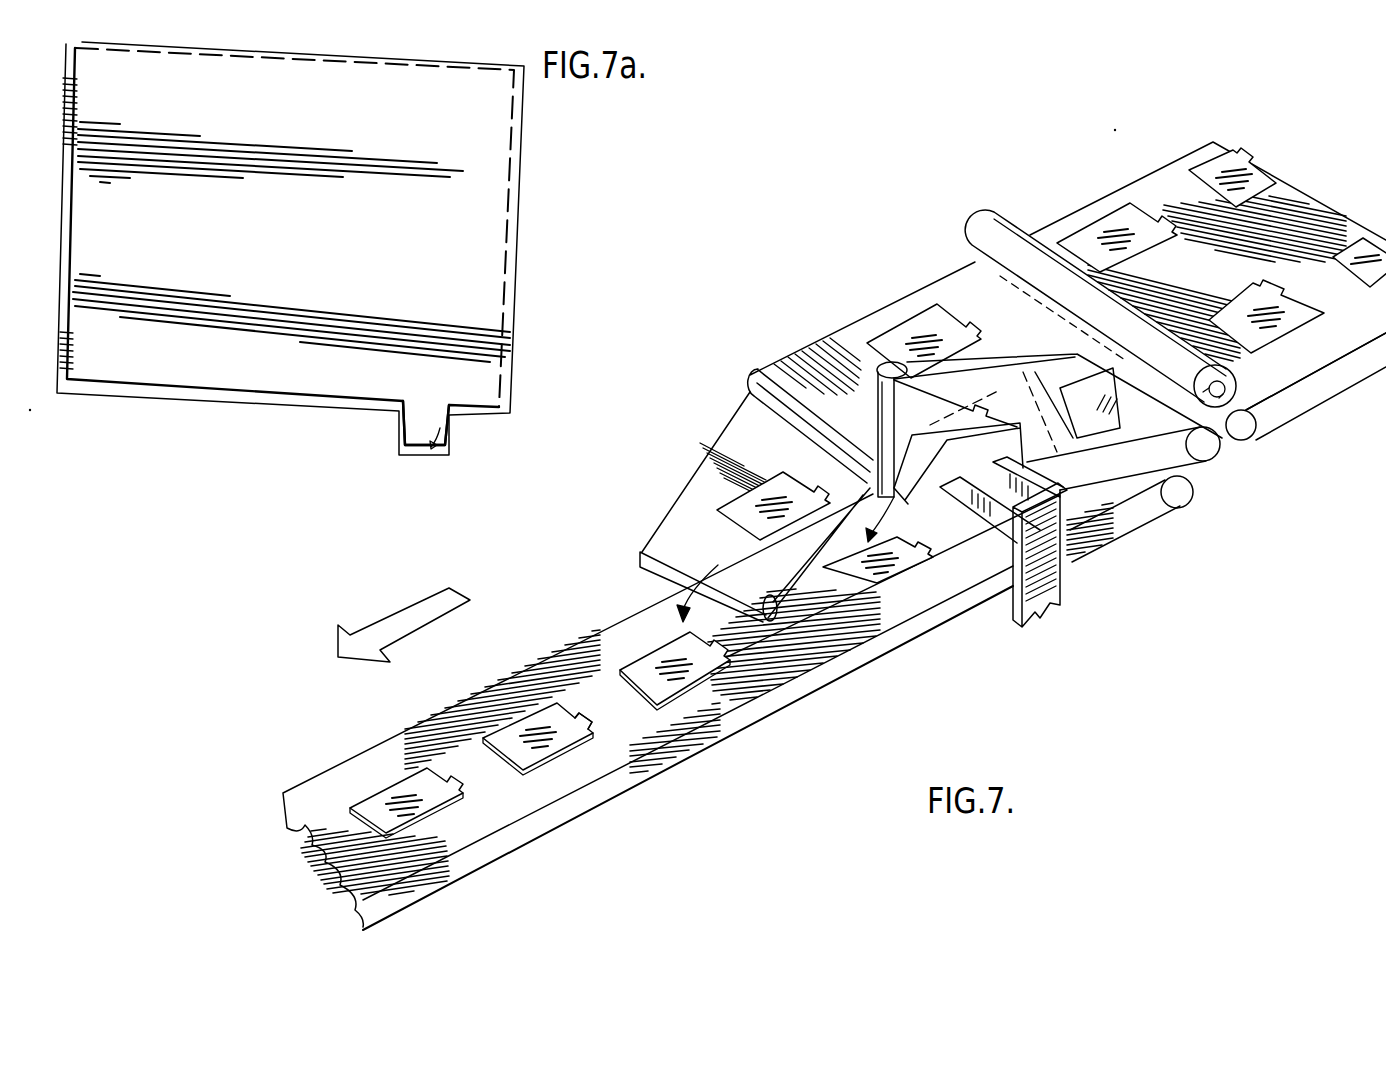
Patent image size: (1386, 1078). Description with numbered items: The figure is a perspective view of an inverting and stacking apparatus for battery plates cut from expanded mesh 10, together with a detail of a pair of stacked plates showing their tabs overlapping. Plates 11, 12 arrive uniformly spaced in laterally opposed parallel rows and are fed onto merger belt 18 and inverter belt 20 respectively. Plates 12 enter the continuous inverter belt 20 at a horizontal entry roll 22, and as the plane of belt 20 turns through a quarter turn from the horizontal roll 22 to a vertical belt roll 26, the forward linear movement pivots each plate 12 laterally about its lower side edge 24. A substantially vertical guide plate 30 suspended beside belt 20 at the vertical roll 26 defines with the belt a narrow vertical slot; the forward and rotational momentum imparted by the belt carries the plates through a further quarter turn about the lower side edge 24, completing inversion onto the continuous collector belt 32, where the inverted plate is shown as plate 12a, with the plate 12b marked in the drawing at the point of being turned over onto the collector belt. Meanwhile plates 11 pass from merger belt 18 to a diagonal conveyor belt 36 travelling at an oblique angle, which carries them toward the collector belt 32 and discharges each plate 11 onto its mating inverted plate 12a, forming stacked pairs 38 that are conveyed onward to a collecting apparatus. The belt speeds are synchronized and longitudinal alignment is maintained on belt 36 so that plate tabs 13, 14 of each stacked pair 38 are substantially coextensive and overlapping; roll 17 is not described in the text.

In FIG. 7, the expanded mesh 10 is at (1349, 345).
In FIG. 7a, the plate 11 is at (461, 115).
In FIG. 7, the plate 11 is at (1107, 235).
In FIG. 7, the plate 12 is at (1266, 333).
In FIG. 7a, the inverted plate 12a is at (326, 407).
In FIG. 7, the label being applied 12b is at (883, 572).
In FIG. 7a, the plate tab 13 is at (433, 457).
In FIG. 7, the plate tab 13 is at (593, 735).
In FIG. 7, the plate tab 14 is at (903, 512).
In FIG. 7, the roller 17 is at (995, 213).
In FIG. 7, the merger belt 18 is at (841, 352).
In FIG. 7, the inverter belt 20 is at (1113, 440).
In FIG. 7, the horizontal entry roll 22 is at (1210, 458).
In FIG. 7, the lower side edge 24 is at (953, 545).
In FIG. 7, the vertical belt roll 26 is at (900, 365).
In FIG. 7, the guide plate 30 is at (1050, 465).
In FIG. 7, the collector belt 32 is at (827, 617).
In FIG. 7, the diagonal conveyor belt 36 is at (683, 513).
In FIG. 7, the stacked pair 38 is at (537, 747).